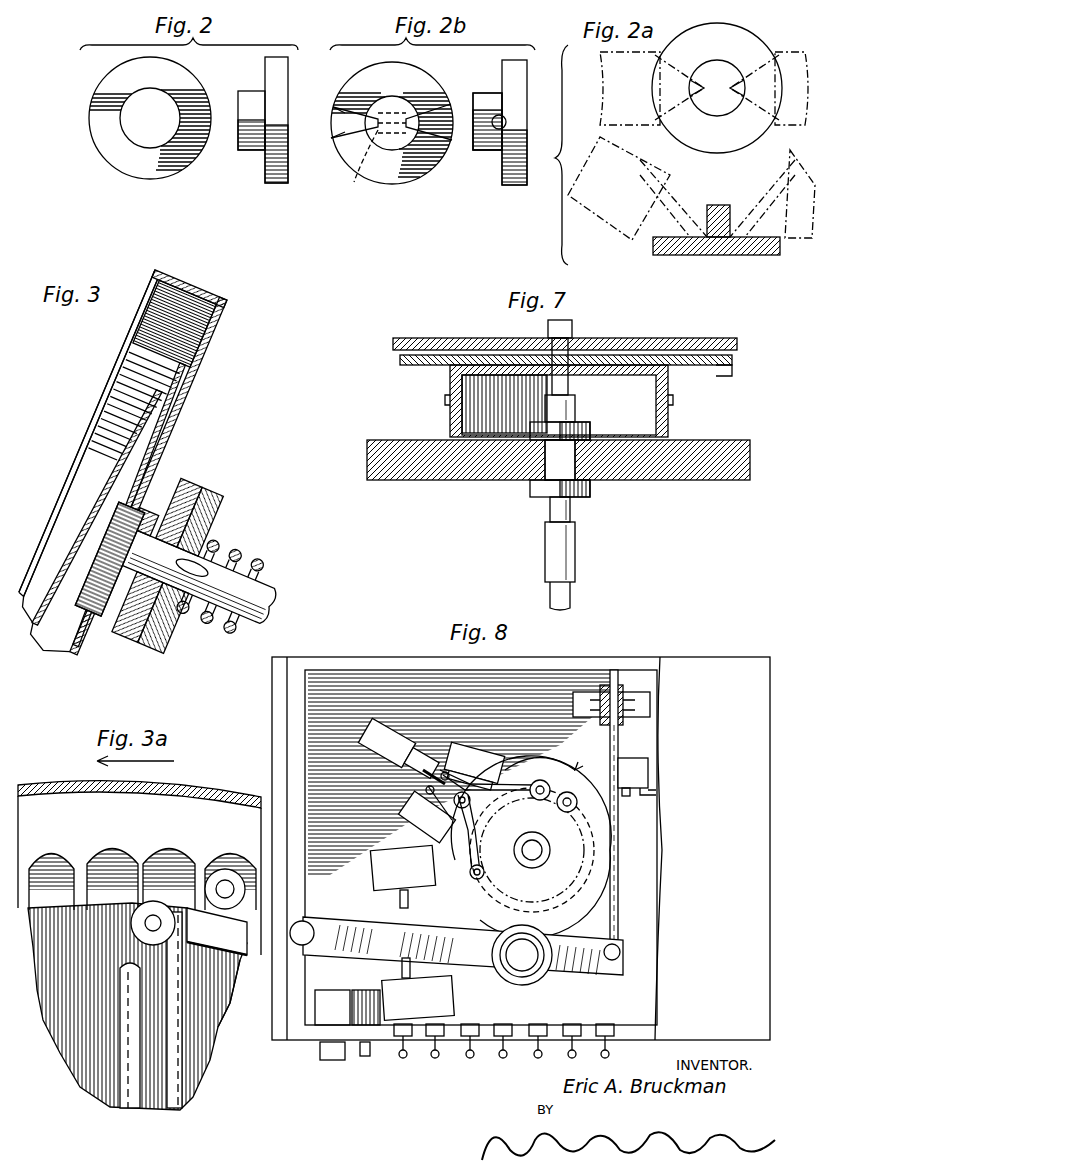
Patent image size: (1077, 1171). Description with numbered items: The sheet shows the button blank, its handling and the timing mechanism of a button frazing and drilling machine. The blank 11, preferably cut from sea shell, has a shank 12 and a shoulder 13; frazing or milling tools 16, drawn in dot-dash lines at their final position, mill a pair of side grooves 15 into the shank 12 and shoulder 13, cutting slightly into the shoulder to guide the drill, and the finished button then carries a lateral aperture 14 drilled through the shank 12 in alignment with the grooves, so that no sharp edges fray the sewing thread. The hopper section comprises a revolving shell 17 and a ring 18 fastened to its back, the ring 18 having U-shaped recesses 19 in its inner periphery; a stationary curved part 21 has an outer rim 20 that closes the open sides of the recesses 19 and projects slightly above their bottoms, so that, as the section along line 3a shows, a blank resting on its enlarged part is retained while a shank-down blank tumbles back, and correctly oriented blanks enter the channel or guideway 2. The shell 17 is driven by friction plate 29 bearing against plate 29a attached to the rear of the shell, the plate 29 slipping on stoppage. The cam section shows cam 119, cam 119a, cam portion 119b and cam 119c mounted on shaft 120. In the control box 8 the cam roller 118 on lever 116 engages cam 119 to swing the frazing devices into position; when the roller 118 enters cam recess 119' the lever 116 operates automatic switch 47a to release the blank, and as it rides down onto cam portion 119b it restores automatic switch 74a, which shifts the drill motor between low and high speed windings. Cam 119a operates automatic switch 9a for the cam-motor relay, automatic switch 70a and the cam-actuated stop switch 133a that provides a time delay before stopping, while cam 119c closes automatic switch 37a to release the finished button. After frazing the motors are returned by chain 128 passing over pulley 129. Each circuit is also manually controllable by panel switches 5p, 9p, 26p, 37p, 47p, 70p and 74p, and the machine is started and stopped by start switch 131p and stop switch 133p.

In FIG. 3, the channel or guideway 2 is at (44, 563).
In FIG. 3a, the channel or guideway 2 is at (133, 1077).
In FIG. 3, the section line 3a— 3a is at (187, 263).
In FIG. 8, the control box 8 is at (706, 688).
In FIG. 8, the automatic switch 9a is at (487, 810).
In FIG. 2, the blank 11 is at (92, 158).
In FIG. 2b, the blank 11 is at (503, 180).
In FIG. 2a, the blank 11 is at (770, 255).
In FIG. 3a, the blank 11 is at (135, 908).
In FIG. 2, the shank 12 is at (160, 140).
In FIG. 2b, the shank 12 is at (493, 150).
In FIG. 2a, the shank 12 is at (726, 62).
In FIG. 2b, the shoulder 13 is at (502, 68).
In FIG. 2b, the lateral aperture 14 is at (537, 128).
In FIG. 2b, the side grooves 15 is at (340, 127).
In FIG. 2a, the side grooves 15 is at (682, 135).
In FIG. 2a, the frazing or milling tools 16 is at (646, 125).
In FIG. 3, the revolving shell 17 is at (206, 289).
In FIG. 3, the ring 18 is at (214, 330).
In FIG. 3a, the ring 18 is at (209, 798).
In FIG. 3, the U-shaped recesses 19 is at (203, 352).
In FIG. 3a, the U-shaped recesses 19 is at (122, 858).
In FIG. 3a, the outer rim or flange 20 is at (246, 955).
In FIG. 3a, the stationary curved part 21 is at (219, 1012).
In FIG. 3, the friction plate 29 is at (163, 636).
In FIG. 3, the plate 29a is at (189, 480).
In FIG. 8, the automatic switch 37a is at (401, 751).
In FIG. 8, the automatic switch 47a is at (402, 876).
In FIG. 8, the automatic switch 70a is at (637, 777).
In FIG. 8, the automatic switch 74a is at (418, 989).
In FIG. 8, the lever 116 is at (350, 925).
In FIG. 8, the cam roller 118 is at (545, 976).
In FIG. 7, the cam 119 is at (606, 354).
In FIG. 8, the cam 119 is at (520, 847).
In FIG. 8, the cam recess 119' is at (518, 845).
In FIG. 7, the cam 119a is at (668, 385).
In FIG. 8, the cam 119a is at (565, 858).
In FIG. 7, the cam portion 119b is at (732, 371).
In FIG. 8, the cam portion 119b is at (578, 870).
In FIG. 7, the cam 119c is at (737, 345).
In FIG. 8, the cam 119c is at (612, 836).
In FIG. 7, the shaft 120 is at (575, 516).
In FIG. 8, the chain 128 is at (618, 752).
In FIG. 8, the pulley 129 is at (615, 690).
In FIG. 8, the cam-actuated stop switch 133a is at (407, 826).
In FIG. 8, the panel switch 5p is at (470, 1060).
In FIG. 8, the panel switch 9p is at (400, 1060).
In FIG. 8, the panel switch 26p is at (434, 1060).
In FIG. 8, the panel switch 37p is at (543, 1018).
In FIG. 8, the panel switch 47p is at (504, 1060).
In FIG. 8, the panel switch 70p is at (568, 1036).
In FIG. 8, the panel switch 74p is at (612, 1056).
In FIG. 8, the start switch 131p is at (320, 1052).
In FIG. 8, the stop switch 133p is at (365, 1058).